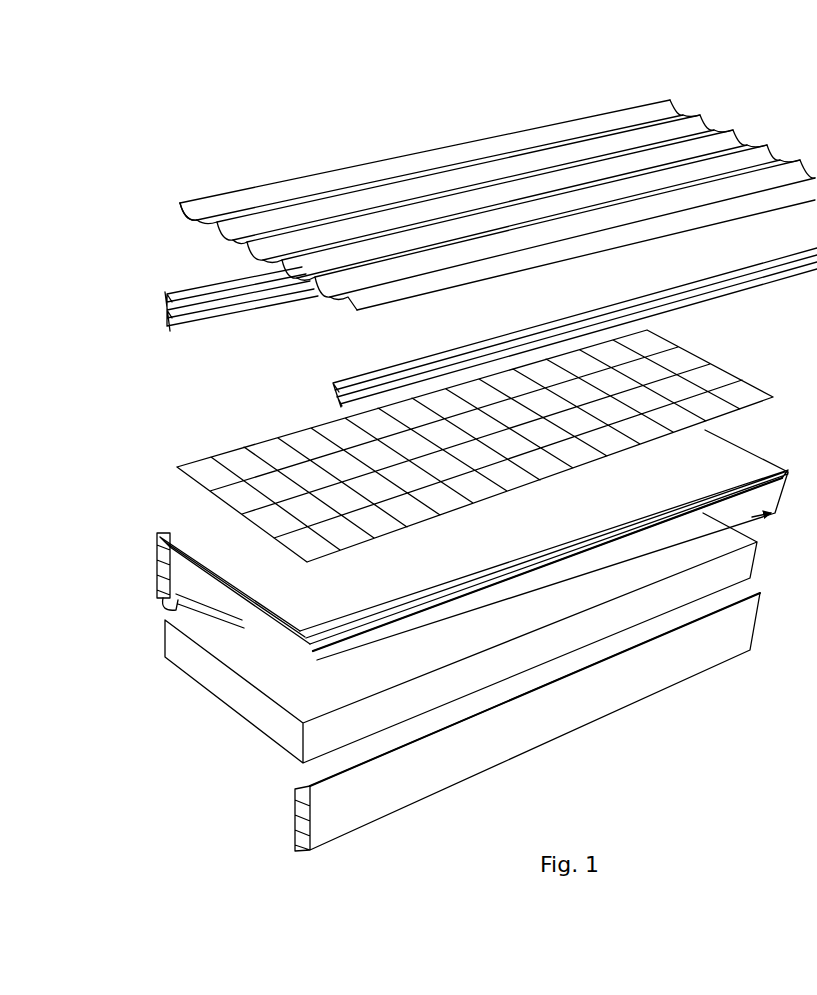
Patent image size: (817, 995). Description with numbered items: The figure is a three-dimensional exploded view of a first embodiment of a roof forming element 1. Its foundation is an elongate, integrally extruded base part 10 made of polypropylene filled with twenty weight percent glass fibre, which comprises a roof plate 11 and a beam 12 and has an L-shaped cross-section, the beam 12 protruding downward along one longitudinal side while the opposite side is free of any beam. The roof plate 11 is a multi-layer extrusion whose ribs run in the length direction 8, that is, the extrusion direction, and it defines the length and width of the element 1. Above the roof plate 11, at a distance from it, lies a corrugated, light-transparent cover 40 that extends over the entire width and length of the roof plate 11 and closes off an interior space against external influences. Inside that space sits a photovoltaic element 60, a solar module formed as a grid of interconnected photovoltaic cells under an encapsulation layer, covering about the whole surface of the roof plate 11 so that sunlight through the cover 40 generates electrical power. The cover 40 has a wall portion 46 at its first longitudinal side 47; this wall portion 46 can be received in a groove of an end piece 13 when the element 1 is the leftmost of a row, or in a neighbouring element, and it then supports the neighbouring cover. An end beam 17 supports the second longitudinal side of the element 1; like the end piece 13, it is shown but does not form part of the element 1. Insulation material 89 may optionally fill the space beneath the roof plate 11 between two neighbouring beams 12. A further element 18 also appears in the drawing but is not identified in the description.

The roof forming element 1 is at (189, 146).
The cover 40 is at (401, 132).
The first longitudinal side 47 is at (684, 95).
The wall portion 46 is at (180, 206).
The end piece 13 is at (197, 334).
The photovoltaic element 60 is at (728, 358).
The roof plate 11 is at (755, 437).
The base part 10 is at (153, 510).
The beam 12 is at (150, 553).
The length direction 8 is at (538, 592).
The insulation material 89 is at (318, 678).
The end beam 17 is at (428, 787).
The plate edge 18 is at (616, 753).